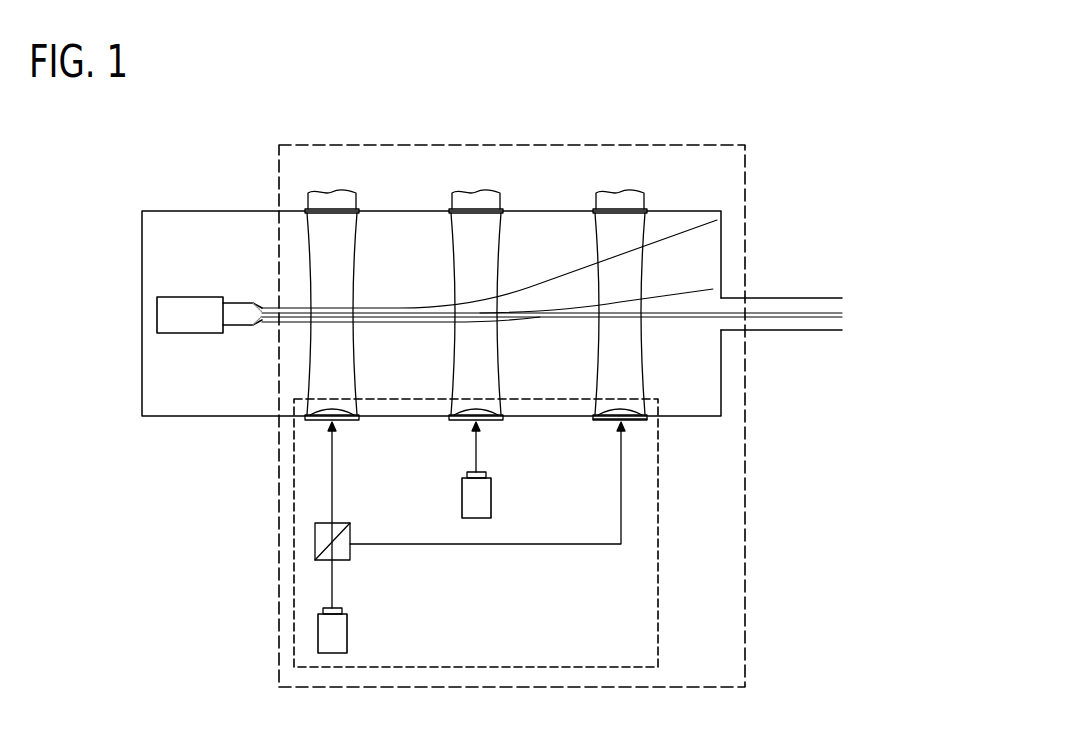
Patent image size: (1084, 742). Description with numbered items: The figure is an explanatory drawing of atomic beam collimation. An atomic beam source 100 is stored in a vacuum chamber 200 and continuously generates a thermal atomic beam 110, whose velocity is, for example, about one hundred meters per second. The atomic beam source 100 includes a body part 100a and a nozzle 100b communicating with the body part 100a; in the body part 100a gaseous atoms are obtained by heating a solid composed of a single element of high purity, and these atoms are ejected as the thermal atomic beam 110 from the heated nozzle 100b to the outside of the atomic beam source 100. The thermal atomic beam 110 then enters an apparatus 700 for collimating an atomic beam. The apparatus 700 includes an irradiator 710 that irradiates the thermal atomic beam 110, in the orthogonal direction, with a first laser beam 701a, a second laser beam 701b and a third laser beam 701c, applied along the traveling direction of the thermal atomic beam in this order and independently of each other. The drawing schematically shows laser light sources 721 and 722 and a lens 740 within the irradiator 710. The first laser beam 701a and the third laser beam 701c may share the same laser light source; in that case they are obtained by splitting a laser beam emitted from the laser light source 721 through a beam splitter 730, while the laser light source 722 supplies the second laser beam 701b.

The atomic beam source 100 is at (144, 263).
The body part 100a is at (187, 297).
The nozzle 100b is at (243, 303).
The thermal atomic beam 110 is at (270, 319).
The vacuum chamber 200 is at (198, 210).
The apparatus for collimating an atomic beam 700 is at (277, 673).
The first laser beam 701a is at (359, 226).
The second laser beam 701b is at (503, 227).
The third laser beam 701c is at (647, 227).
The irradiator 710 is at (659, 582).
The laser light source 721 is at (348, 636).
The laser light source 722 is at (492, 494).
The beam splitter 730 is at (350, 532).
The lens 740 is at (648, 421).